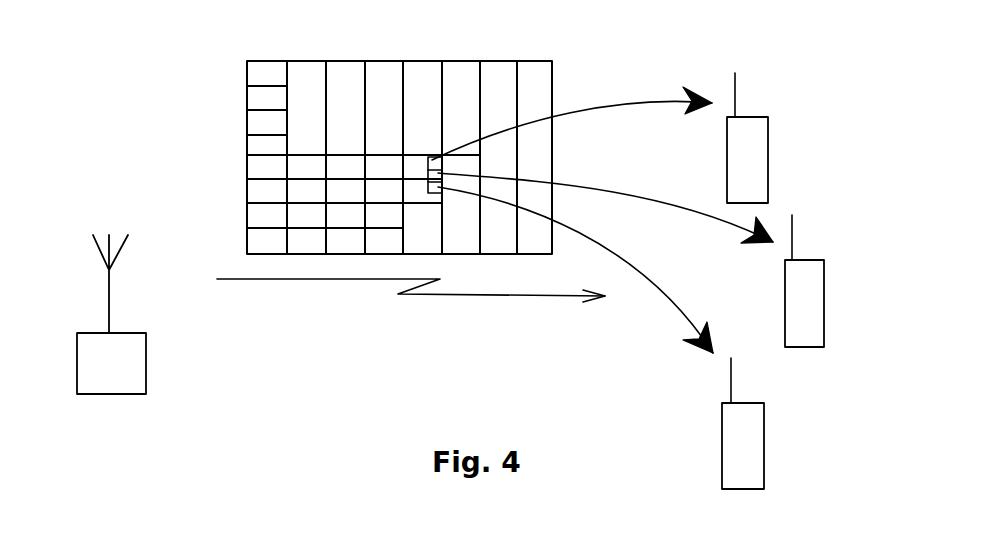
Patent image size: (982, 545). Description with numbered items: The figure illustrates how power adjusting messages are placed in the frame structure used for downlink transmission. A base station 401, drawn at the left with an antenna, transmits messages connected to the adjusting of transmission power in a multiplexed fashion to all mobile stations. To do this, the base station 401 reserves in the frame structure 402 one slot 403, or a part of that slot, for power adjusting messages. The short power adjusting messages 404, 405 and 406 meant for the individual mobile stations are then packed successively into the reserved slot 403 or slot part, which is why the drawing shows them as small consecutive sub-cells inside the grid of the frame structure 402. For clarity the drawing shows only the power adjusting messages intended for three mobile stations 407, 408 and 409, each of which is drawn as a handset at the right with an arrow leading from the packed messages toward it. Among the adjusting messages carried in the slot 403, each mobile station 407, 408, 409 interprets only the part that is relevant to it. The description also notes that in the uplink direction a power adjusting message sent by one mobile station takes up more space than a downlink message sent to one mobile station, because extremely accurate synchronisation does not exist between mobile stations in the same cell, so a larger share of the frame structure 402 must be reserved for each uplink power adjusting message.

The base station 401 is at (77, 383).
The frame structure 402 is at (248, 120).
The slot 403 is at (408, 193).
The power adjusting message 404 is at (430, 184).
The power adjusting message 405 is at (430, 171).
The power adjusting message 406 is at (432, 158).
The mobile station 407 is at (768, 173).
The mobile station 408 is at (824, 322).
The mobile station 409 is at (764, 470).